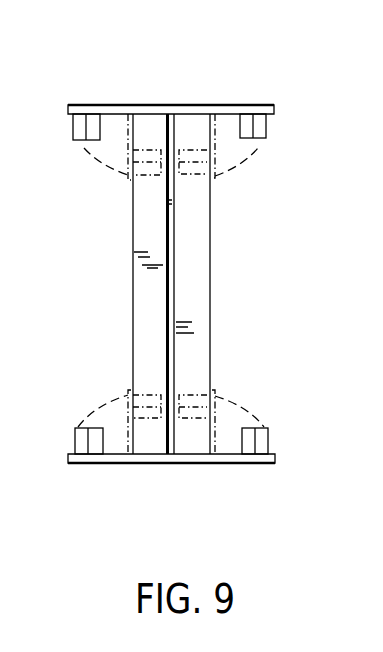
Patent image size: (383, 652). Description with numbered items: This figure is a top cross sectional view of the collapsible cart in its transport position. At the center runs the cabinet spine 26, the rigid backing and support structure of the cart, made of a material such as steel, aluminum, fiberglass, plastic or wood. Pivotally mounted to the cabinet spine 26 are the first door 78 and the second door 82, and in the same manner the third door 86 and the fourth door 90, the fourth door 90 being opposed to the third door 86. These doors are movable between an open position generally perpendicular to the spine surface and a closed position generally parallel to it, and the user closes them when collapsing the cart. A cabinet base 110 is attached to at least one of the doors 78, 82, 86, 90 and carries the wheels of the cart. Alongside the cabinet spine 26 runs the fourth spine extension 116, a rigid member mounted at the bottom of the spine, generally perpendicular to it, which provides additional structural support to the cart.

The cabinet spine 26 is at (175, 300).
The first door 78 is at (237, 104).
The second door 82 is at (235, 464).
The third door 86 is at (108, 104).
The fourth door 90 is at (110, 464).
The cabinet base 110 is at (74, 122).
The fourth spine extension 116 is at (147, 230).